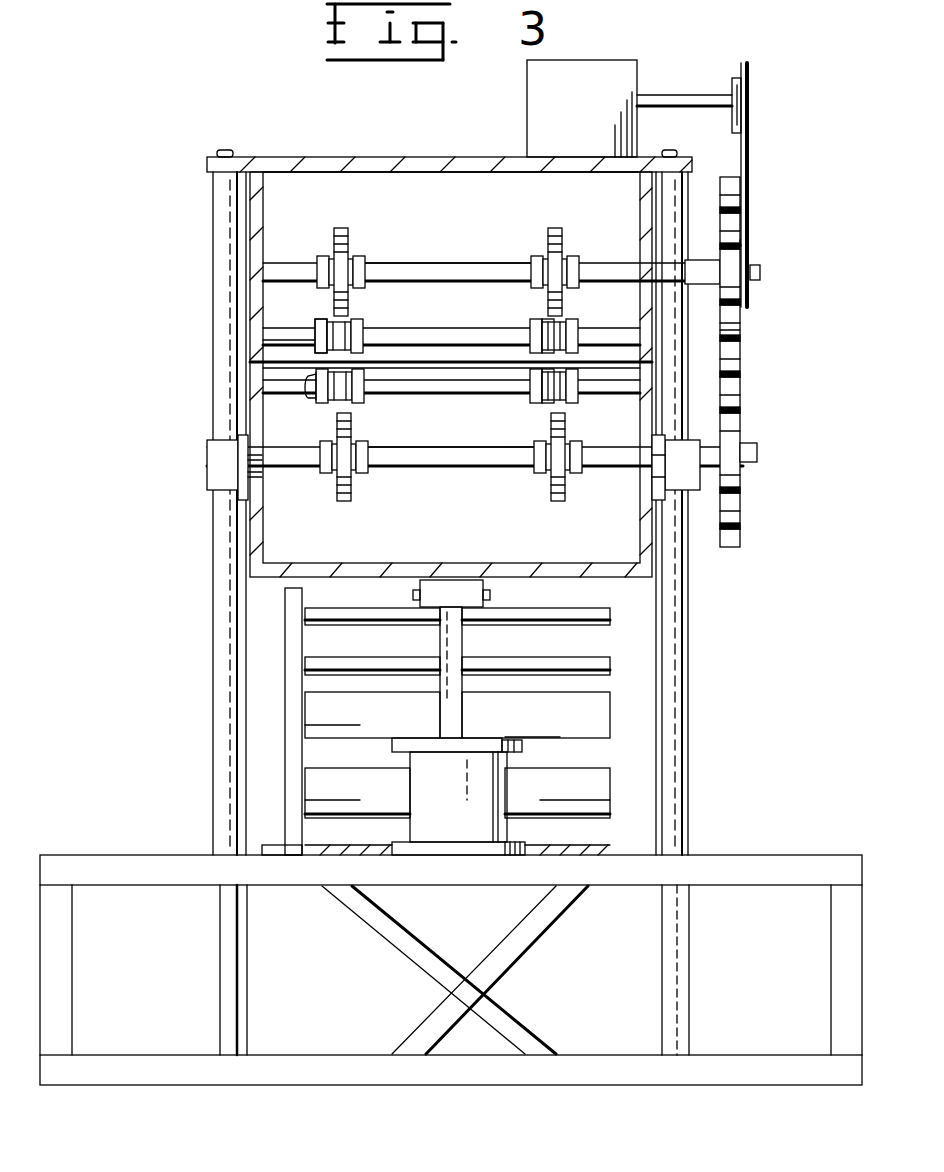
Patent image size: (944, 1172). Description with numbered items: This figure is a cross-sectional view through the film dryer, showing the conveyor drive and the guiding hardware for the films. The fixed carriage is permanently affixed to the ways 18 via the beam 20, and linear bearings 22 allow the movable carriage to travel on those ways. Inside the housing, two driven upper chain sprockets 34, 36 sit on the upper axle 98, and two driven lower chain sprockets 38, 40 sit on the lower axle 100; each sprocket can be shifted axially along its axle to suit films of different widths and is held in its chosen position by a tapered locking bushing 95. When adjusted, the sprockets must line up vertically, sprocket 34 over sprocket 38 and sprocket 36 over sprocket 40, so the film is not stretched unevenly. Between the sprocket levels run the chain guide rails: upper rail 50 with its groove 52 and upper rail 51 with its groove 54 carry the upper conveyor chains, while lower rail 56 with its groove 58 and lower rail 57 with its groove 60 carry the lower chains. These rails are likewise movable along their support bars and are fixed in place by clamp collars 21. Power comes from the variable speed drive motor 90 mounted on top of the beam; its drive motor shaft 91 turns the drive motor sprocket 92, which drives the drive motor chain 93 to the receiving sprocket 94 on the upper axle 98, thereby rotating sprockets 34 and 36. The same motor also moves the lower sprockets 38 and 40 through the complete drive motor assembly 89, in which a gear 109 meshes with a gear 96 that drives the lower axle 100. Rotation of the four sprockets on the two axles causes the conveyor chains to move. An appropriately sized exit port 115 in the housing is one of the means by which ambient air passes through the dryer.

The ways 18 is at (688, 718).
The beam 20 is at (207, 163).
The clamp collars 21 is at (285, 348).
The linear bearings 22 is at (207, 462).
The upper chain sprocket 34 is at (545, 257).
The upper chain sprocket 36 is at (347, 234).
The lower chain sprocket 38 is at (543, 480).
The lower chain sprocket 40 is at (357, 483).
The upper rail 50 is at (355, 320).
The upper rail 51 is at (560, 320).
The groove 52 is at (333, 320).
The groove 54 is at (545, 318).
The lower rail 56 is at (354, 400).
The lower rail 57 is at (577, 402).
The groove 58 is at (318, 386).
The groove 60 is at (555, 392).
The drive motor assembly 89 is at (815, 177).
The variable speed drive motor 90 is at (616, 60).
The drive motor shaft 91 is at (672, 93).
The drive motor sprocket 92 is at (736, 78).
The drive motor chain 93 is at (750, 145).
The receiving sprocket 94 is at (740, 243).
The tapered locking bushings 95 is at (322, 262).
The gear 96 is at (738, 403).
The upper axle 98 is at (760, 268).
The lower axle 100 is at (758, 452).
The gear 109 is at (735, 331).
The exit port 115 is at (282, 227).